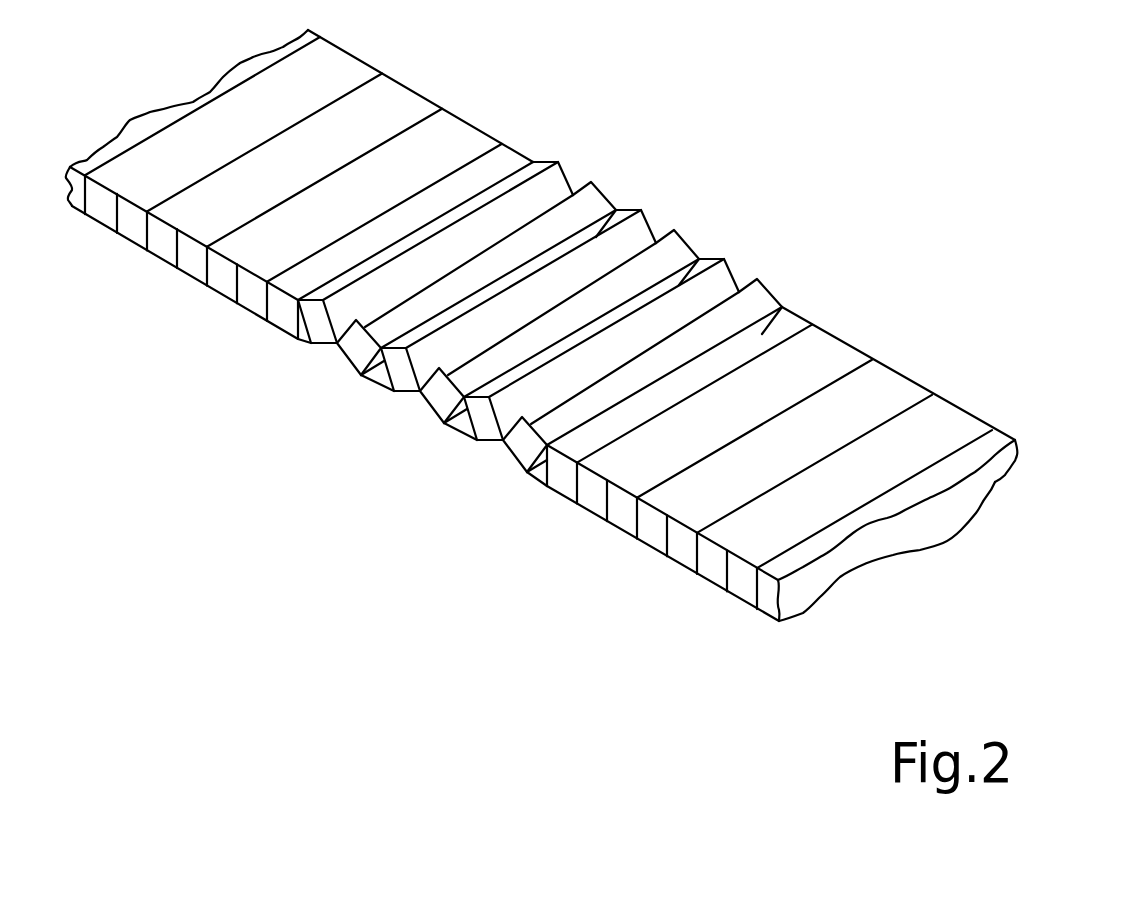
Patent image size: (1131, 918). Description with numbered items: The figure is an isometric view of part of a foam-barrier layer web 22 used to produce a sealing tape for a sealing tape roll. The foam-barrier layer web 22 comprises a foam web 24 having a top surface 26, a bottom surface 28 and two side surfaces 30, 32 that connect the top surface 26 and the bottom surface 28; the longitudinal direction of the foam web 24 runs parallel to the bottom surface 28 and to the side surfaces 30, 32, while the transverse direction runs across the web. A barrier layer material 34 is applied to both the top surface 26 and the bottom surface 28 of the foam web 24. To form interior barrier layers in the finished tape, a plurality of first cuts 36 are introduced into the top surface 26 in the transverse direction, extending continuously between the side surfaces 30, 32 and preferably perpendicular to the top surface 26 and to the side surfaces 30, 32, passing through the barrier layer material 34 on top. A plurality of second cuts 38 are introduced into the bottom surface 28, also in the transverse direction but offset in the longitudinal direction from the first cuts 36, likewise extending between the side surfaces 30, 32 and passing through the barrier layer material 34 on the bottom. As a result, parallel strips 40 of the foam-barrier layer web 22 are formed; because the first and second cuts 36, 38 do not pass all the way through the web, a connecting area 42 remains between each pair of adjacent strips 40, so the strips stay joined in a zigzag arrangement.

The foam-barrier layer web 22 is at (950, 167).
The foam web 24 is at (1016, 455).
The top surface 26 is at (873, 390).
The bottom surface 28 is at (647, 542).
The side surface 30 is at (795, 308).
The side surface 32 is at (580, 507).
The barrier layer material 34 is at (822, 550).
The first cuts 36 is at (900, 412).
The second cuts 38 is at (727, 565).
The strips 40 is at (308, 322).
The connecting area 42 is at (618, 210).